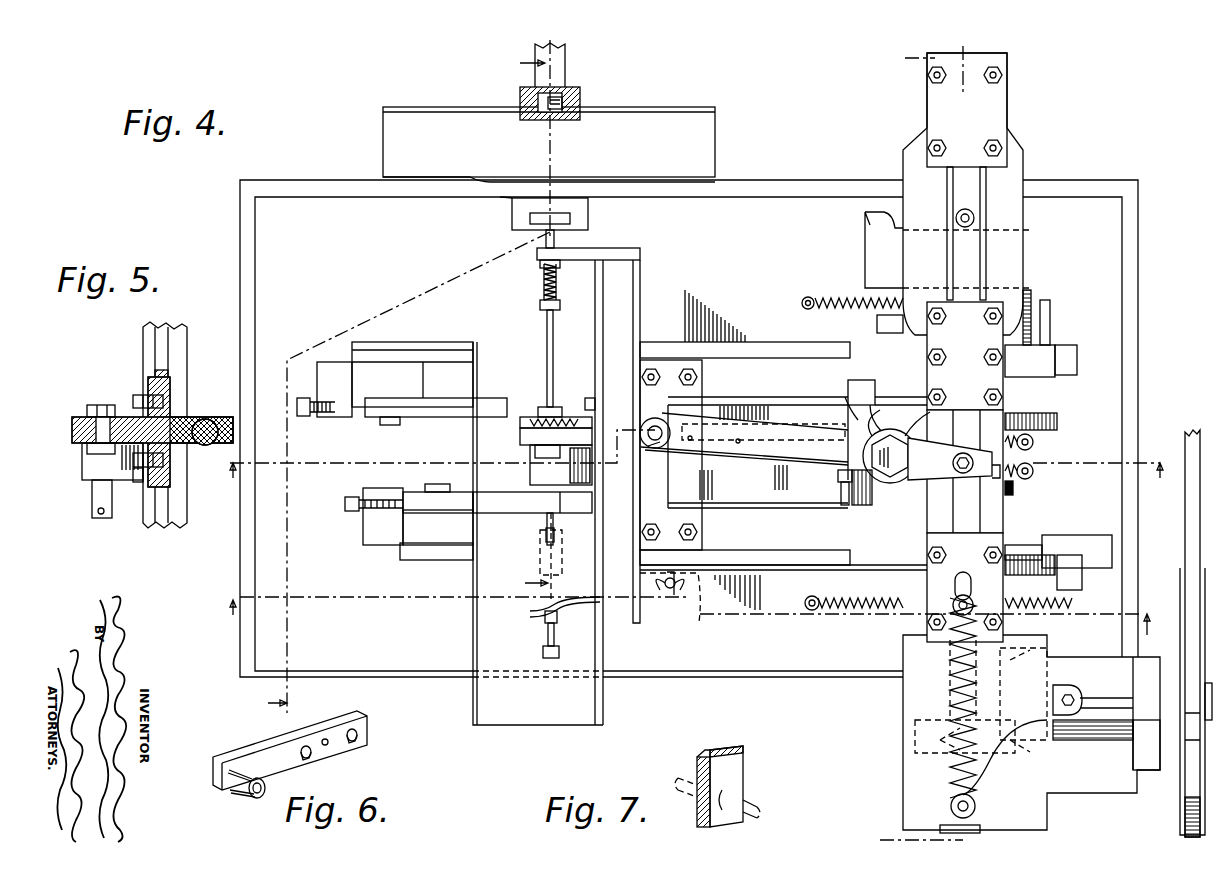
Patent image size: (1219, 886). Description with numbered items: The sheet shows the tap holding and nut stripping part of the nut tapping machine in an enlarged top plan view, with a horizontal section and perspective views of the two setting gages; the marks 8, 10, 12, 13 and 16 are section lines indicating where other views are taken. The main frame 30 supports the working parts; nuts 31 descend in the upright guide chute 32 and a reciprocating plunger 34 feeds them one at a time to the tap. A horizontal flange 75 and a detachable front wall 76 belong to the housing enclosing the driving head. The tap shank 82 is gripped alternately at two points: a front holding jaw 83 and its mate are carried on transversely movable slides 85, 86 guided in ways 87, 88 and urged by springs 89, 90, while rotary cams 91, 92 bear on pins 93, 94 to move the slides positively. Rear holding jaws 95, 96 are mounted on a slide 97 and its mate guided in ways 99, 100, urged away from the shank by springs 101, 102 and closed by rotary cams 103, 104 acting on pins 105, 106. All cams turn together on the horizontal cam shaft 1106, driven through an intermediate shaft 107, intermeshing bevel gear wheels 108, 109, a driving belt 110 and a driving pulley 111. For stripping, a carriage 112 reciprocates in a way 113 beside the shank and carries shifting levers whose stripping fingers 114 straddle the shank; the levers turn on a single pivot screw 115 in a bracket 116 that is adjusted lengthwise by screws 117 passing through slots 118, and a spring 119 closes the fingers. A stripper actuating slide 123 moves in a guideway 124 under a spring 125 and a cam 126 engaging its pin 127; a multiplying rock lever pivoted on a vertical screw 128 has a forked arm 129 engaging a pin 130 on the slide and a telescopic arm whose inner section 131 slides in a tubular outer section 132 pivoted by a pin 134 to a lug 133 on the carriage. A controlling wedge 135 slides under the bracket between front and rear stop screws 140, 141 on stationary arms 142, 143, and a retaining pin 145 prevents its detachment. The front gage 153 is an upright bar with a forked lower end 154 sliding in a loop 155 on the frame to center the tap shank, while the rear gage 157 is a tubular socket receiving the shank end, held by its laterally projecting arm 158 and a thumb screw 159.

In FIG. 4, the section line 8- 8 is at (409, 386).
In FIG. 4, the section line 10- 10 is at (548, 372).
In FIG. 4, the section line 12- 12 is at (691, 609).
In FIG. 4, the section line 13- 13 is at (688, 457).
In FIG. 4, the slide bracket 16 is at (941, 444).
In FIG. 4, the main frame 30 is at (258, 215).
In FIG. 4, the nuts or blanks 31 is at (580, 104).
In FIG. 4, the upright guide chute 32 is at (542, 120).
In FIG. 4, the reciprocating plunger 34 is at (566, 69).
In FIG. 4, the horizontal flange 75 is at (715, 131).
In FIG. 4, the front wall 76 is at (688, 108).
In FIG. 4, the tap shank 82 is at (554, 331).
In FIG. 7, the tap shank 82 is at (756, 818).
In FIG. 4, the front holding jaw 83 is at (436, 411).
In FIG. 4, the transversely movable slide 85 is at (447, 342).
In FIG. 4, the transversely movable slide 86 is at (914, 396).
In FIG. 4, the way 87 is at (777, 344).
In FIG. 4, the way 88 is at (744, 452).
In FIG. 4, the spring 89 is at (845, 296).
In FIG. 4, the spring 90 is at (1033, 446).
In FIG. 4, the rotary cam 91 is at (877, 323).
In FIG. 4, the rotary cam 92 is at (1045, 413).
In FIG. 4, the pin 93 is at (1046, 346).
In FIG. 4, the pin 94 is at (880, 412).
In FIG. 4, the rear tap holding jaw 95 is at (532, 502).
In FIG. 4, the rear tap holding jaw 96 is at (575, 502).
In FIG. 4, the transversely movable slide 97 is at (407, 561).
In FIG. 4, the way 99 is at (776, 576).
In FIG. 4, the way 100 is at (801, 504).
In FIG. 4, the spring 101 is at (898, 613).
In FIG. 4, the spring 102 is at (1031, 478).
In FIG. 4, the rotary cam 103 is at (1015, 557).
In FIG. 4, the rotary cam 104 is at (880, 506).
In FIG. 4, the pin 105 is at (1075, 582).
In FIG. 4, the pin 106 is at (845, 506).
In FIG. 4, the transverse intermediate shaft 107 is at (1053, 701).
In FIG. 4, the bevel gear wheel 108 is at (1016, 656).
In FIG. 4, the bevel gear wheel 109 is at (915, 744).
In FIG. 4, the driving belt 110 is at (1185, 528).
In FIG. 4, the driving pulley 111 is at (1180, 580).
In FIG. 5, the carriage 112 is at (168, 382).
In FIG. 4, the way 113 is at (606, 313).
In FIG. 5, the way 113 is at (162, 349).
In FIG. 4, the stripping fingers 114 is at (522, 417).
In FIG. 5, the stripping fingers 114 is at (72, 420).
In FIG. 4, the pivot screw 115 is at (535, 450).
In FIG. 5, the pivot screw 115 is at (103, 405).
In FIG. 4, the bracket 116 is at (530, 470).
In FIG. 5, the bracket 116 is at (122, 463).
In FIG. 5, the adjusting screws 117 is at (163, 402).
In FIG. 5, the longitudinal slots 118 is at (143, 500).
In FIG. 4, the spring 119 is at (540, 434).
In FIG. 4, the stripper actuating slide 123 is at (955, 228).
In FIG. 4, the horizontal longitudinal guideway 124 is at (992, 247).
In FIG. 4, the spring 125 is at (950, 690).
In FIG. 4, the rotary cam 126 is at (865, 240).
In FIG. 4, the pin 127 is at (975, 216).
In FIG. 4, the vertical screw 128 is at (933, 417).
In FIG. 4, the fork-shaped arm 129 is at (1000, 480).
In FIG. 4, the screw or pin 130 is at (961, 455).
In FIG. 4, the inner section 131 is at (845, 397).
In FIG. 4, the tubular outer section 132 is at (757, 452).
In FIG. 5, the tubular outer section 132 is at (233, 417).
In FIG. 4, the lug 133 is at (649, 452).
In FIG. 5, the lug 133 is at (186, 426).
In FIG. 4, the pivot pin 134 is at (720, 449).
In FIG. 5, the pivot pin 134 is at (180, 448).
In FIG. 4, the stripper controlling wedge 135 is at (546, 522).
In FIG. 5, the stripper controlling wedge 135 is at (92, 501).
In FIG. 4, the front stop screw 140 is at (557, 296).
In FIG. 4, the rear stop screw 141 is at (543, 617).
In FIG. 4, the stationary arm 142 is at (601, 254).
In FIG. 4, the stationary arm 143 is at (543, 651).
In FIG. 4, the retaining pin 145 is at (556, 537).
In FIG. 5, the retaining pin 145 is at (100, 514).
In FIG. 4, the front gage 153 is at (572, 218).
In FIG. 7, the front gage 153 is at (741, 748).
In FIG. 7, the forked lower end 154 is at (703, 821).
In FIG. 4, the loop 155 is at (512, 229).
In FIG. 4, the rear gage 157 is at (540, 566).
In FIG. 6, the rear gage 157 is at (252, 796).
In FIG. 4, the laterally projecting arm 158 is at (699, 622).
In FIG. 6, the laterally projecting arm 158 is at (362, 733).
In FIG. 4, the thumb screw 159 is at (668, 592).
In FIG. 4, the horizontal cam shaft 1106 is at (1000, 829).